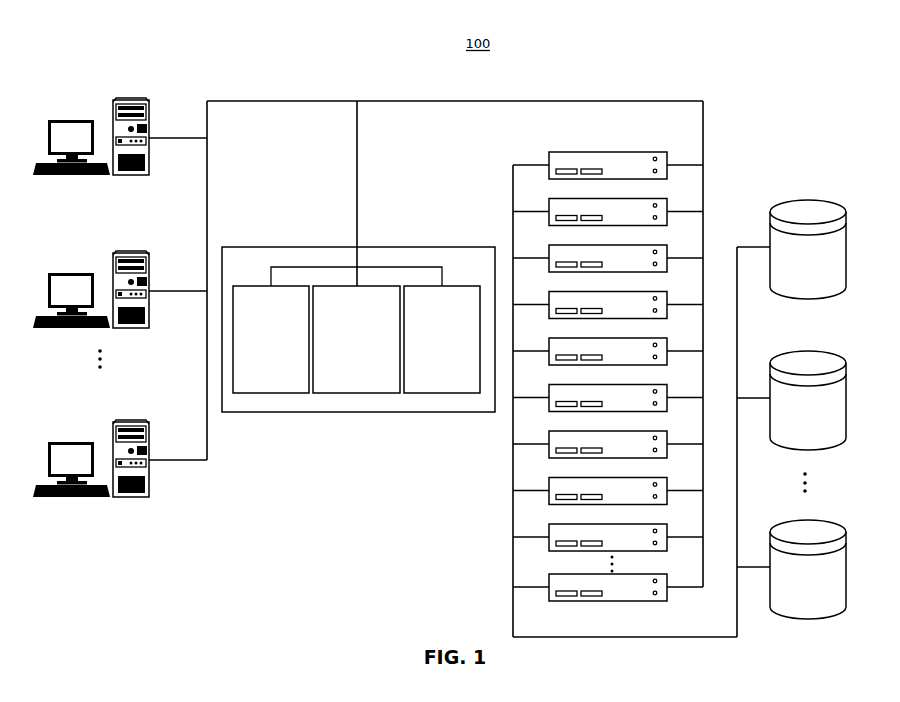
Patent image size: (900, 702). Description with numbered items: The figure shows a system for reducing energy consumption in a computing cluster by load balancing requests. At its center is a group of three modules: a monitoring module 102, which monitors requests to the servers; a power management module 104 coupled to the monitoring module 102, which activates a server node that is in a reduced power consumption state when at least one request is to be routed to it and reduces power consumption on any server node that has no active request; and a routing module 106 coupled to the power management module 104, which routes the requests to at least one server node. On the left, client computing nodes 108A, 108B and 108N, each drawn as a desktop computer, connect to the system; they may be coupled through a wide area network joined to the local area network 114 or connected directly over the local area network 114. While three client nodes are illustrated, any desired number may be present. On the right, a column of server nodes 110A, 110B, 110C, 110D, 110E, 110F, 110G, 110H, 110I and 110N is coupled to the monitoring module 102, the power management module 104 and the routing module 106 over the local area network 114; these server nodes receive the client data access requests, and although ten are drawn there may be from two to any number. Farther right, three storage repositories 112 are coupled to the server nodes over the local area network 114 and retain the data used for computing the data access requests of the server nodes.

The monitoring module 102 is at (243, 286).
The power management module 104 is at (370, 286).
The routing module 106 is at (458, 286).
The client computing node 108A is at (126, 98).
The client computing node 108B is at (120, 277).
The client computing node 108N is at (120, 446).
The server node 110A is at (608, 165).
The server node 110B is at (608, 212).
The server node 110C is at (608, 258).
The server node 110D is at (608, 305).
The server node 110E is at (608, 351).
The server node 110F is at (608, 398).
The server node 110G is at (608, 444).
The server node 110H is at (608, 491).
The server node 110I is at (608, 537).
The server node 110N is at (608, 587).
The storage repository 112 is at (846, 249).
The local area network 114 is at (423, 101).